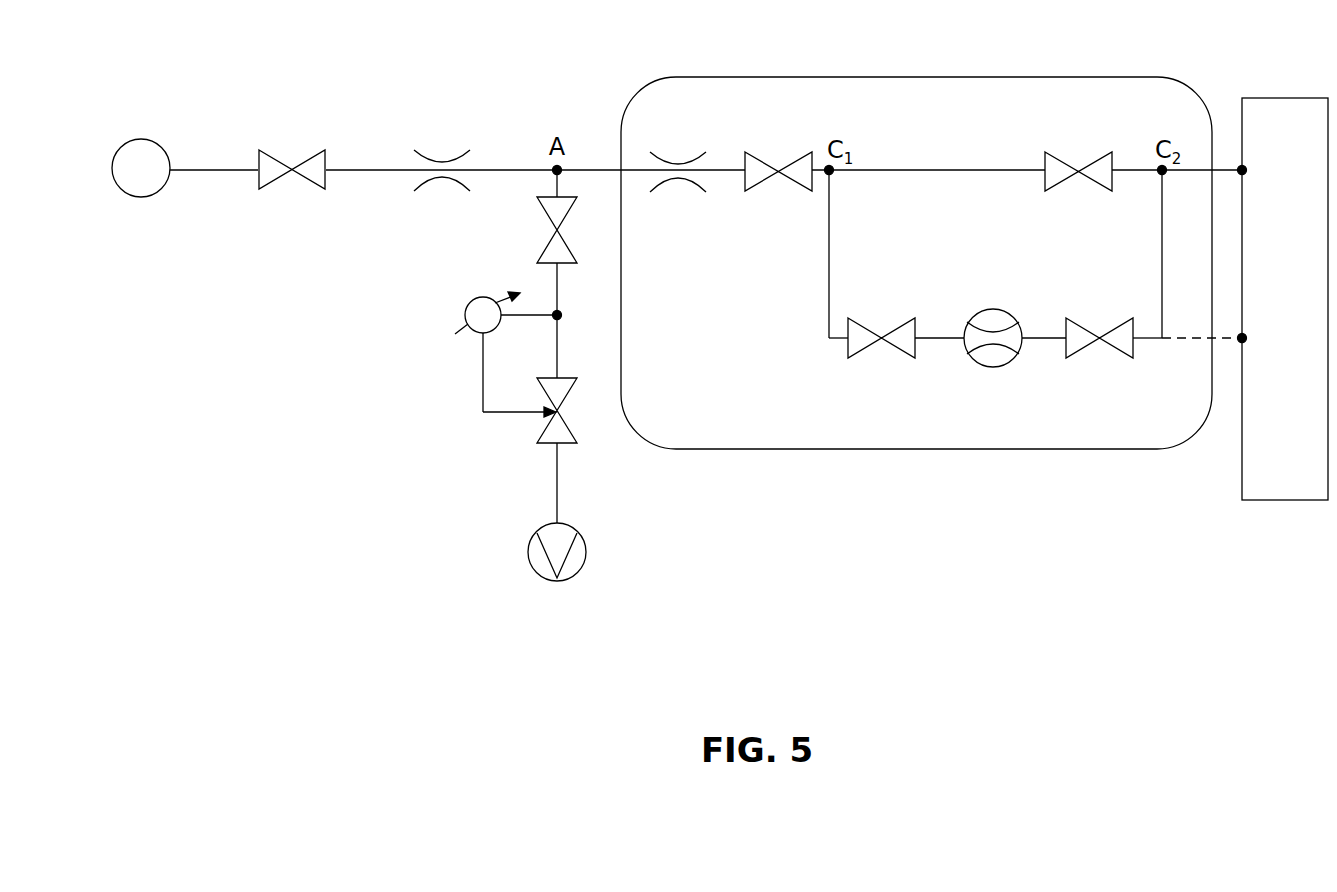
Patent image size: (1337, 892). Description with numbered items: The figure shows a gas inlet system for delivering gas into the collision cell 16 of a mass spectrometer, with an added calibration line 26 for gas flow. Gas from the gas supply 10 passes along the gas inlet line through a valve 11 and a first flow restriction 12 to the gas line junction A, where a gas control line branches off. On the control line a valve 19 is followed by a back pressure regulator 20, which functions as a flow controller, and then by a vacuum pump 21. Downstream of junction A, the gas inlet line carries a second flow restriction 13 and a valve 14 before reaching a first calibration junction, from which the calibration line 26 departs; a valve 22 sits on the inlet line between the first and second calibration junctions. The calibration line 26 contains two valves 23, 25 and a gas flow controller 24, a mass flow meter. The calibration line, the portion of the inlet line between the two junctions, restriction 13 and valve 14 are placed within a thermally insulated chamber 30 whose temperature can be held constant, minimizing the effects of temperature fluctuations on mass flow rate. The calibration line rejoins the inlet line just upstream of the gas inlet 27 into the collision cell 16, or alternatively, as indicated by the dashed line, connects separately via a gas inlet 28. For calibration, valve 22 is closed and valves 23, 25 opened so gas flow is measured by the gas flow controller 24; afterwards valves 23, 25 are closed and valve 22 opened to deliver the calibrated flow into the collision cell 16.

The gas supply 10 is at (125, 126).
The valve 11 is at (276, 134).
The first flow restriction 12 is at (426, 134).
The second flow restriction 13 is at (662, 140).
The valve 14 is at (762, 140).
The collision cell 16 is at (1267, 286).
The valve 19 is at (574, 244).
The back pressure regulator 20 is at (492, 391).
The vacuum pump 21 is at (483, 565).
The valve 22 is at (1062, 140).
The valve 23 is at (865, 382).
The gas flow controller 24 is at (975, 406).
The valve 25 is at (1083, 393).
The calibration line 26 is at (786, 301).
The gas inlet 27 is at (1231, 152).
The gas connection/gas inlet 28 is at (1236, 355).
The thermally insulated chamber 30 is at (650, 409).